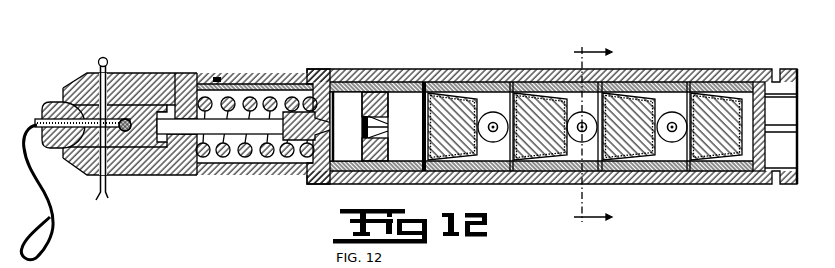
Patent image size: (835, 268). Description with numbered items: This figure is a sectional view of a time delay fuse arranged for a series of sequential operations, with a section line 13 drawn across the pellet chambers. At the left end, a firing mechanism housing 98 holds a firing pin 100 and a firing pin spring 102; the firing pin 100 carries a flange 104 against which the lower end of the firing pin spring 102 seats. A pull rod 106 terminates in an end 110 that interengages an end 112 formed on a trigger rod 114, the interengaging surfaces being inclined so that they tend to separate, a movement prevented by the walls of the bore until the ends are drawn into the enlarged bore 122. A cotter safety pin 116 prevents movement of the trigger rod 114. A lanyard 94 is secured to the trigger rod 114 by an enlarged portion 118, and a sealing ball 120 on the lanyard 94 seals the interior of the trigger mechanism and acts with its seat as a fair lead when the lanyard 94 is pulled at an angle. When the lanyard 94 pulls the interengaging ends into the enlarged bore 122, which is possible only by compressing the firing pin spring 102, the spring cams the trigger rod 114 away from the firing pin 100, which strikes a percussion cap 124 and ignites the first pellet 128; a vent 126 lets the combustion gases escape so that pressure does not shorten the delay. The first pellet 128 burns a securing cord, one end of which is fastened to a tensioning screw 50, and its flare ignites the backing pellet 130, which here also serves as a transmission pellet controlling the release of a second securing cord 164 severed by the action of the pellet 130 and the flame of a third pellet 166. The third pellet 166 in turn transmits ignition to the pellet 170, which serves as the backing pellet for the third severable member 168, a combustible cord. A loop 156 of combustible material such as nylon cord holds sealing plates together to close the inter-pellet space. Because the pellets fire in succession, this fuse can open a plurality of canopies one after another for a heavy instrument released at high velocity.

The tensioning screw 50 is at (655, 185).
The lanyard 94 is at (53, 204).
The firing mechanism housing 98 is at (195, 72).
The firing pin 100 is at (343, 126).
The firing pin spring 102 is at (268, 100).
The flange 104 is at (323, 70).
The pull rod 106 is at (215, 122).
The end of pull rod 110 is at (178, 75).
The end of trigger rod 112 is at (184, 172).
The trigger rod 114 is at (148, 105).
The cotter safety pin 116 is at (107, 60).
The enlarged portion 118 is at (113, 178).
The sealing ball 120 is at (45, 100).
The enlarged bore 122 is at (153, 175).
The percussion cap 124 is at (378, 117).
The vent 126 is at (410, 82).
The first pellet 128 is at (475, 69).
The backing pellet 130 is at (523, 88).
The loop 156 is at (493, 112).
The second securing cord 164 is at (578, 112).
The third pellet 166 is at (640, 86).
The third severable member 168 is at (672, 112).
The pellet 170 is at (743, 70).
The section line 13- 13 is at (600, 136).